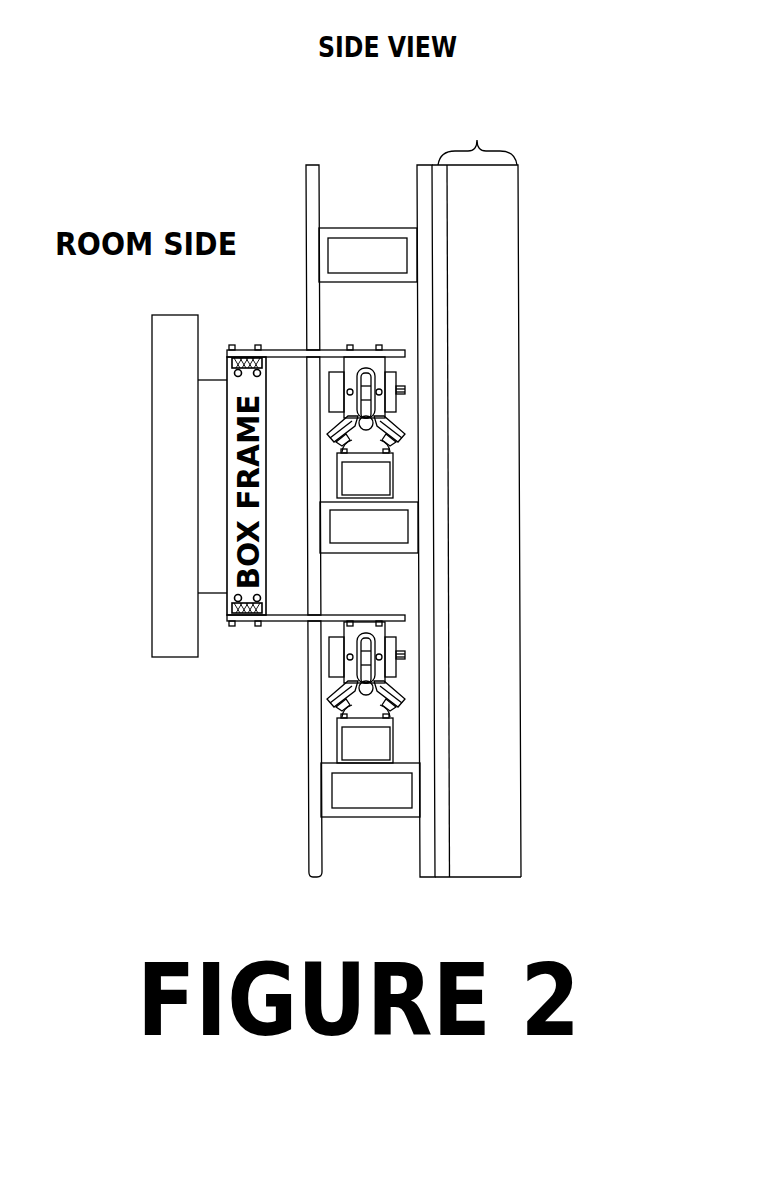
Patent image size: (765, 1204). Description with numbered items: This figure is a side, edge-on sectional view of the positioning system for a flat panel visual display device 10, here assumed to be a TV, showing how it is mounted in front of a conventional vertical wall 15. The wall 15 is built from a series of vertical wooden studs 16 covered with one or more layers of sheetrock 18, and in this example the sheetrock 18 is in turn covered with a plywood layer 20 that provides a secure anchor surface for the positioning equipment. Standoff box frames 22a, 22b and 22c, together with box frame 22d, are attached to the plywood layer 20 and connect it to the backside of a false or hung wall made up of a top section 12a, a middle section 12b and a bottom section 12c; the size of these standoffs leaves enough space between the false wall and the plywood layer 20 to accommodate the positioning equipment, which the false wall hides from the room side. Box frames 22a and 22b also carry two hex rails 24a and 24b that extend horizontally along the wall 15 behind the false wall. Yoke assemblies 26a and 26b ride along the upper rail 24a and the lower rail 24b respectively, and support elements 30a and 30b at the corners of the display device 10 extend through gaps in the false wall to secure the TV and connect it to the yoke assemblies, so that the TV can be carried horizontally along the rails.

The flat panel visual display device 10 is at (180, 657).
The top section of false wall 12a is at (307, 185).
The middle section of false wall 12b is at (310, 382).
The bottom section of false wall 12c is at (310, 717).
The vertical wall 15 is at (476, 138).
The wooden studs 16 is at (522, 817).
The sheetrock 18 is at (443, 877).
The plywood layer 20 is at (420, 867).
The standoff box frame 22a is at (410, 553).
The standoff box frame 22b is at (413, 817).
The standoff box frame 22c is at (397, 227).
The top cross member inner 22d is at (367, 255).
The upper hex rail 24a is at (393, 470).
The lower hex rail 24b is at (393, 733).
The yoke assembly 26a is at (387, 362).
The yoke assembly 26b is at (390, 627).
The support element 30a is at (395, 347).
The support element 30b is at (395, 613).